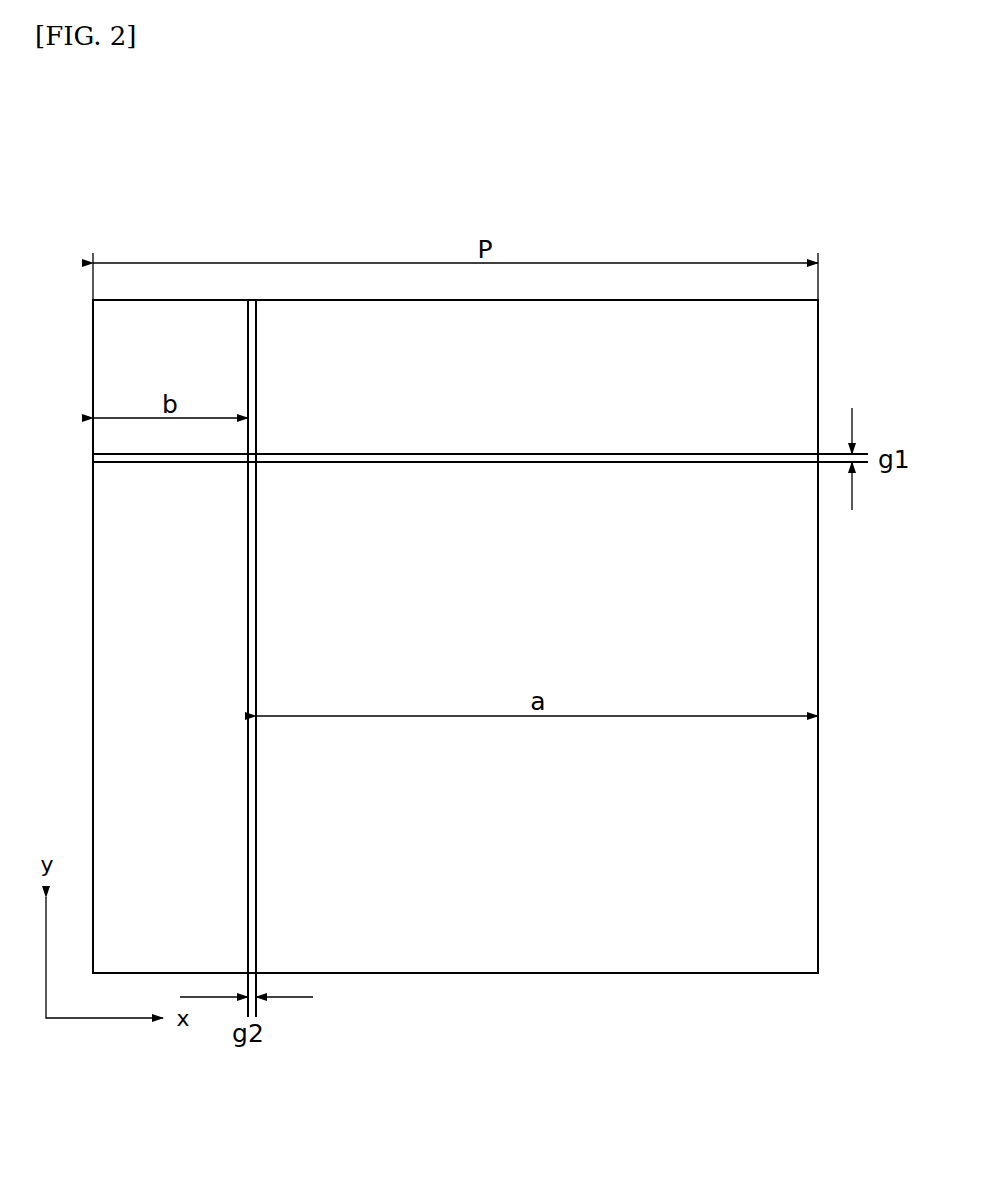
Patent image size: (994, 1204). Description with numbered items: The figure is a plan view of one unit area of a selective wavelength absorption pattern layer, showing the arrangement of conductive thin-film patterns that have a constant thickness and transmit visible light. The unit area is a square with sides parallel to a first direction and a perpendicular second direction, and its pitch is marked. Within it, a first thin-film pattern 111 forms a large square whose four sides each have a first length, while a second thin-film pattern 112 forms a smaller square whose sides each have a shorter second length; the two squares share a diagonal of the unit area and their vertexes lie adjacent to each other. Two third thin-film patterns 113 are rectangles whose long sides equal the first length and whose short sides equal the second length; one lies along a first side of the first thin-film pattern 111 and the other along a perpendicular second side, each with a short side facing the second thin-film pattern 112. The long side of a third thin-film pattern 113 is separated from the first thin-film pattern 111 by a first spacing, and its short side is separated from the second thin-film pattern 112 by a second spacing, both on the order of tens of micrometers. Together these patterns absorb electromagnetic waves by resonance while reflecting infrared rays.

The first thin-film pattern 111 is at (603, 493).
The second thin-film pattern 112 is at (195, 333).
The third thin-film pattern 113 is at (337, 357).